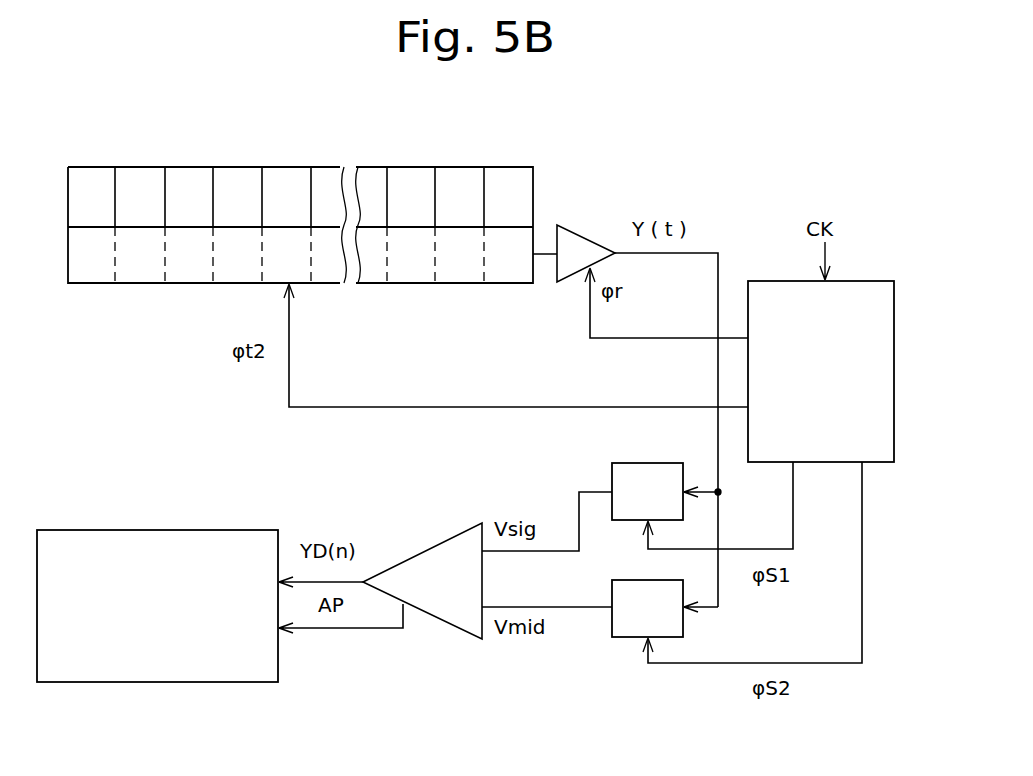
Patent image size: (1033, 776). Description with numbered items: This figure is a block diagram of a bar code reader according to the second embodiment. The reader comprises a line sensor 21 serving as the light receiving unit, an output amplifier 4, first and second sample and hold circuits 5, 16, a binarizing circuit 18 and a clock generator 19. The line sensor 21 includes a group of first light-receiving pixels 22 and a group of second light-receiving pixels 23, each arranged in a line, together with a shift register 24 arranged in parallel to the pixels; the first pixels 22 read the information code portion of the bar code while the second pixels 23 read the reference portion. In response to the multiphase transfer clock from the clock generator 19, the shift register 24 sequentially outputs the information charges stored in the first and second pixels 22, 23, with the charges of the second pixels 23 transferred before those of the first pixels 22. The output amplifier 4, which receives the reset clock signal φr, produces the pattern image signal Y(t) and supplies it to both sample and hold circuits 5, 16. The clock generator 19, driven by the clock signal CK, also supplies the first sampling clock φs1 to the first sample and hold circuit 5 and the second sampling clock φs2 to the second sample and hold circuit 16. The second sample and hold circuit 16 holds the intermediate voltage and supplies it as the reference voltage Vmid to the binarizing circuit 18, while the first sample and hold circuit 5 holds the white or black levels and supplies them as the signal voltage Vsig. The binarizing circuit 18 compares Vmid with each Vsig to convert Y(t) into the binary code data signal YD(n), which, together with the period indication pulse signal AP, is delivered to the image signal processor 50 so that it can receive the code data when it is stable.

The output amplifier 4 is at (584, 238).
The first sample and hold circuit 5 is at (612, 470).
The second sample and hold circuit 16 is at (620, 637).
The binarizing circuit 18 is at (442, 622).
The clock generator 19 is at (825, 462).
The line sensor 21 is at (232, 300).
The first light-receiving pixels 22 is at (103, 167).
The second light-receiving pixels 23 is at (508, 176).
The shift register 24 is at (412, 283).
The image signal processor 50 is at (88, 530).